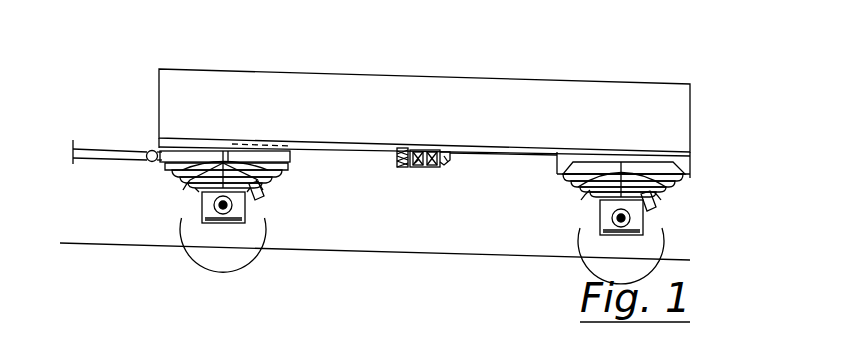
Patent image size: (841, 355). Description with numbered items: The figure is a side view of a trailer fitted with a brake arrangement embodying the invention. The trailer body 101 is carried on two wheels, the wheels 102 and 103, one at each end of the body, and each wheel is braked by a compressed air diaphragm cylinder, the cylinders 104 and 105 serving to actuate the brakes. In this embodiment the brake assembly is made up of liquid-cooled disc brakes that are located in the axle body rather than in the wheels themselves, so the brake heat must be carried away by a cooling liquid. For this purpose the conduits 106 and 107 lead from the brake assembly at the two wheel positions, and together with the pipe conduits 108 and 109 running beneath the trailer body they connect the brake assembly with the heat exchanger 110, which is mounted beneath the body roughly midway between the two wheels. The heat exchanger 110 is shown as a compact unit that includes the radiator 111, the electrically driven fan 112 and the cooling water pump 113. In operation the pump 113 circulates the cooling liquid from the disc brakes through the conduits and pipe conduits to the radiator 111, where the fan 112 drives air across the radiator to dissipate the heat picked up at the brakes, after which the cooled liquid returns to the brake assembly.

The trailer body 101 is at (340, 102).
The wheel 102 is at (186, 203).
The wheel 103 is at (657, 224).
The compressed air diaphragm cylinder 104 is at (258, 198).
The compressed air diaphragm cylinder 105 is at (652, 207).
The conduit 106 is at (223, 165).
The conduit 107 is at (655, 171).
The pipe conduit 108 is at (350, 148).
The pipe conduit 109 is at (518, 157).
The heat exchanger 110 is at (418, 158).
The radiator 111 is at (397, 158).
The electrically driven fan 112 is at (418, 164).
The cooling water pump 113 is at (441, 164).